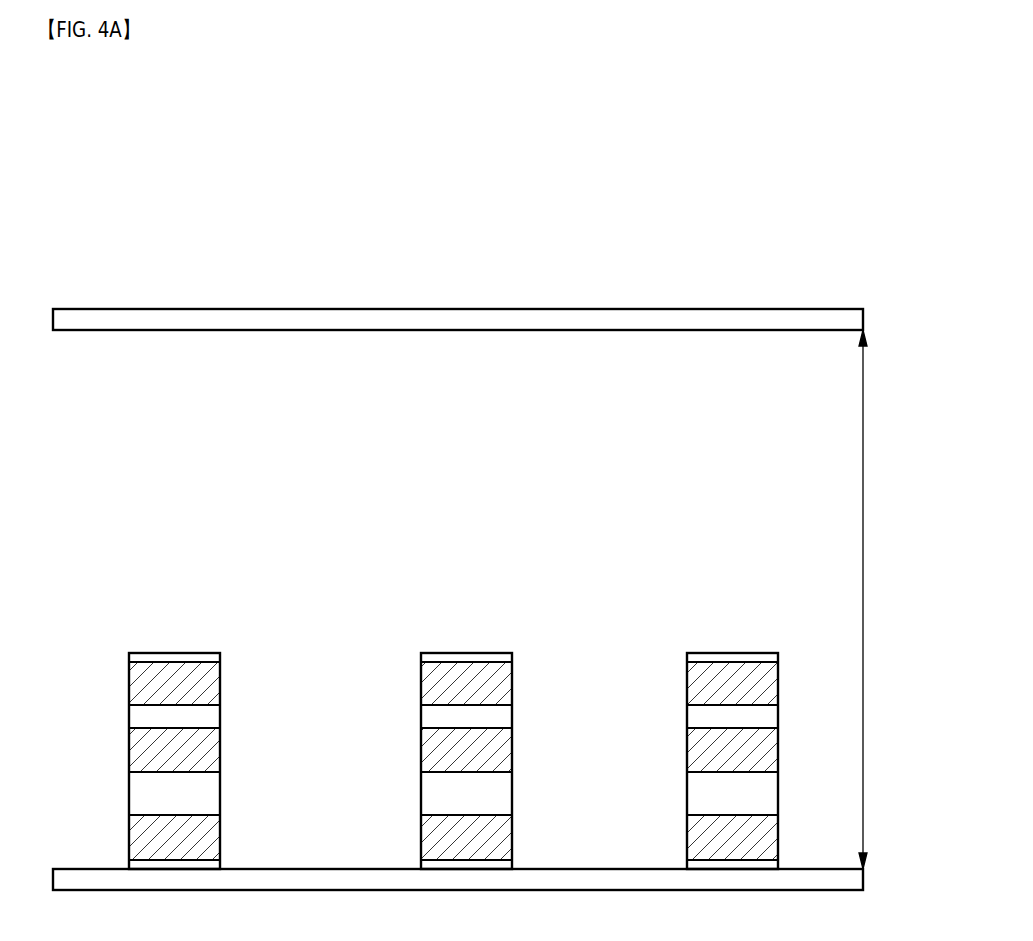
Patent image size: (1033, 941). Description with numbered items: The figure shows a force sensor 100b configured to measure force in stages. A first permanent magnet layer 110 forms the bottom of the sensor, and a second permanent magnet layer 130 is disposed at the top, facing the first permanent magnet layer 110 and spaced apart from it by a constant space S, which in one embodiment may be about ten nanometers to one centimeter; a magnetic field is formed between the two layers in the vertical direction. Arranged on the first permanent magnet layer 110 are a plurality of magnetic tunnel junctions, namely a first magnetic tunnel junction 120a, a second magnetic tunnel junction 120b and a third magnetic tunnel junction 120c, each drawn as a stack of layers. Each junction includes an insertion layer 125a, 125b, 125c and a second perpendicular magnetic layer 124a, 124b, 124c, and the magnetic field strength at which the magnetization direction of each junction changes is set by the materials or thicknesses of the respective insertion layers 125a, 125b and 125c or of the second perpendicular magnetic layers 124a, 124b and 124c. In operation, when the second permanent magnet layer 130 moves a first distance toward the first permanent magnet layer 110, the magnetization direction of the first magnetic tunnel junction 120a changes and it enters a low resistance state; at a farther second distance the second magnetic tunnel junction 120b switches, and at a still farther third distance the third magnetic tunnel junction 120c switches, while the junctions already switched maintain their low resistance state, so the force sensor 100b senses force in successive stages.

The force sensor 100b is at (512, 157).
The first permanent magnet layer 110 is at (855, 878).
The first magnetic tunnel junction 120a is at (198, 597).
The second magnetic tunnel junction 120b is at (489, 597).
The third magnetic tunnel junction 120c is at (755, 597).
The second perpendicular magnetic layer 124a is at (212, 750).
The second perpendicular magnetic layer 124b is at (504, 750).
The second perpendicular magnetic layer 124c is at (770, 750).
The insertion layer 125a is at (212, 716).
The insertion layer 125b is at (504, 716).
The insertion layer 125c is at (770, 716).
The second permanent magnet layer 130 is at (855, 317).